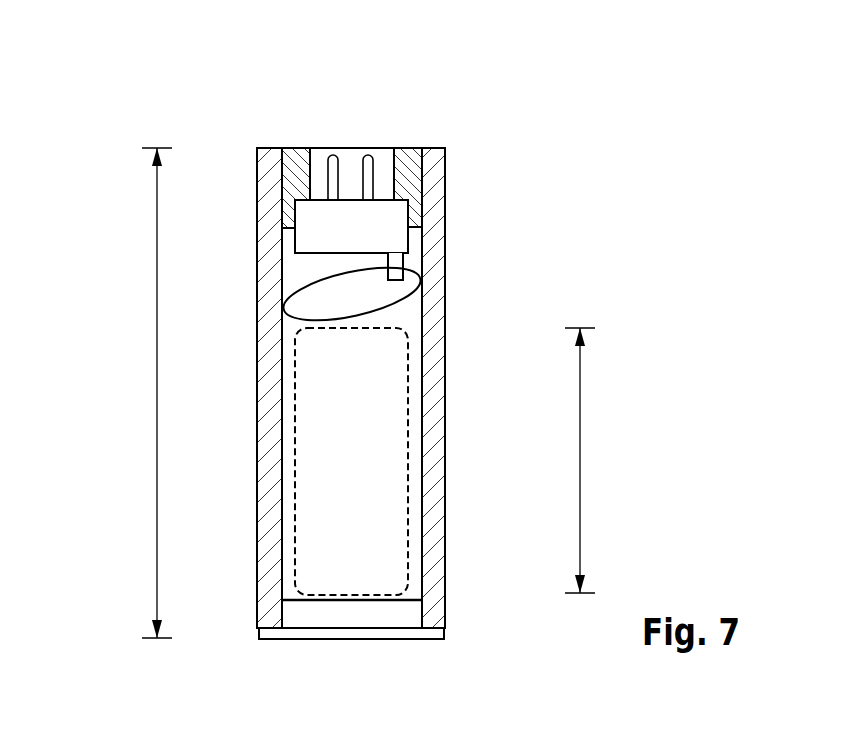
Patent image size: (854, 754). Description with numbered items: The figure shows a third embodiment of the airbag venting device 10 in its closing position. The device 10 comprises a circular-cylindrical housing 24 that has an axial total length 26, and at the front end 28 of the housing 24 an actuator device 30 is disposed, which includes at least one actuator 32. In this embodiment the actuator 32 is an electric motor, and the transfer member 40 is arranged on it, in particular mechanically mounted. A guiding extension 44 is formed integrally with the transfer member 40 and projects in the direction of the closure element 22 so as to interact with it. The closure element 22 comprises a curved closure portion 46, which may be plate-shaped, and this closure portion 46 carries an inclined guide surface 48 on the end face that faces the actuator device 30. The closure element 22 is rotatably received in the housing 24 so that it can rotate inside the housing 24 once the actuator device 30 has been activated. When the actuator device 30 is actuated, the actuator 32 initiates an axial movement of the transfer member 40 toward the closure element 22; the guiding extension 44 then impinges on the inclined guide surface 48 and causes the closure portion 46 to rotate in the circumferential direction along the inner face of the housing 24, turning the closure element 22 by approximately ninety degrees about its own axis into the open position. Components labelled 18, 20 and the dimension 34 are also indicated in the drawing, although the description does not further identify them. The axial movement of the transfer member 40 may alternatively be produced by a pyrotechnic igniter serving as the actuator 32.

The airbag venting device 10 is at (207, 118).
The container 18 is at (408, 407).
The reservoir 20 is at (351, 461).
The closure element 22 is at (403, 322).
The housing 24 is at (270, 435).
The axial total length 26 is at (157, 436).
The front end 28 is at (322, 137).
The actuator device 30 is at (455, 182).
The actuator 32 is at (407, 160).
The chamber height 34 is at (580, 470).
The transfer member 40 is at (317, 240).
The guiding extension 44 is at (392, 262).
The closure portion 46 is at (283, 383).
The inclined guide surface 48 is at (313, 297).